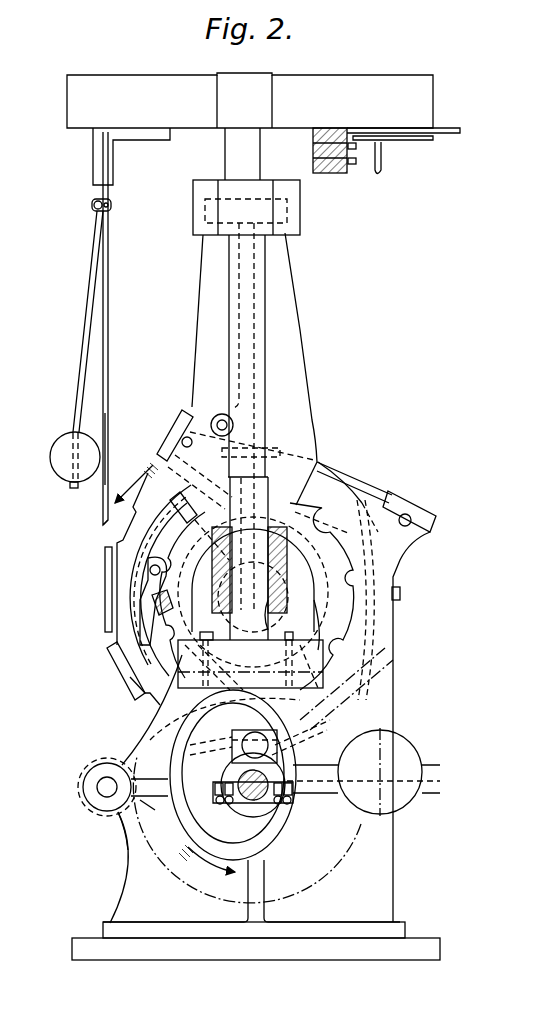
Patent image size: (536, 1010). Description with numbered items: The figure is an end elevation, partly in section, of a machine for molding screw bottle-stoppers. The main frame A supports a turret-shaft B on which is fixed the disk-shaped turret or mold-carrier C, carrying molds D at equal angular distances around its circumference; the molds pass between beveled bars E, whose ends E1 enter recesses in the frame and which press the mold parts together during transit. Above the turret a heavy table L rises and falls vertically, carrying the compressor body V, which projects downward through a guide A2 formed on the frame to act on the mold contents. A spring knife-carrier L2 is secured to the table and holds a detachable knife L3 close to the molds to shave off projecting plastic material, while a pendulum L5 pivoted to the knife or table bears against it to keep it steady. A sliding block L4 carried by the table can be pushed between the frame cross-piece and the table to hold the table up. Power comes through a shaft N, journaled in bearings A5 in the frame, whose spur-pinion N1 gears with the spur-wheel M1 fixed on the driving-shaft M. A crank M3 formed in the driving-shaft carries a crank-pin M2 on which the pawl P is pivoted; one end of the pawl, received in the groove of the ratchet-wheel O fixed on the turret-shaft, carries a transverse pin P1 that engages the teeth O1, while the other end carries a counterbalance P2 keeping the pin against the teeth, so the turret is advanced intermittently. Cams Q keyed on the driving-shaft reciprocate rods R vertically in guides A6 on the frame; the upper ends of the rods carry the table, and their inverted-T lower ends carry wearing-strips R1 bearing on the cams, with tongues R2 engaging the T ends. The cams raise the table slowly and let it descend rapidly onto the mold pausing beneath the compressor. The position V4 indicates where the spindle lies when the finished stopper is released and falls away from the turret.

The table L is at (263, 129).
The sliding block L4 is at (334, 176).
The guide A2 is at (293, 223).
The main frame A is at (256, 591).
The pendulum L5 is at (73, 391).
The spring knife-carrier L2 is at (110, 392).
The cutter or knife L3 is at (108, 535).
The compressor body V is at (216, 417).
The rods R is at (270, 388).
The guides A6 is at (257, 530).
The turret-shaft B is at (280, 615).
The tongues R2 is at (327, 653).
The wearing-strips R1 is at (250, 665).
The bars E is at (362, 492).
The bar ends E1 is at (427, 490).
The teeth O1 is at (413, 620).
The ratchet-wheel O is at (257, 596).
The turret or mold-carrier C is at (400, 598).
The molds D is at (115, 634).
The pawl P is at (153, 645).
The transverse pin P1 is at (150, 571).
The cams Q is at (278, 823).
The driving-shaft M is at (247, 828).
The crank M3 is at (231, 748).
The crank-pin M2 is at (256, 754).
The spur-wheel M1 is at (170, 722).
The shaft N is at (123, 787).
The spur-pinion N1 is at (100, 818).
The bearings A5 is at (147, 815).
The counterbalance P2 is at (363, 772).
The spindle discharge position V4 is at (353, 737).